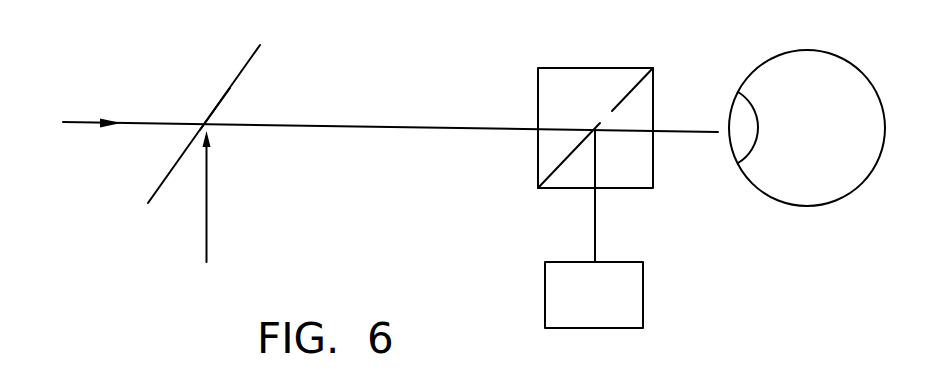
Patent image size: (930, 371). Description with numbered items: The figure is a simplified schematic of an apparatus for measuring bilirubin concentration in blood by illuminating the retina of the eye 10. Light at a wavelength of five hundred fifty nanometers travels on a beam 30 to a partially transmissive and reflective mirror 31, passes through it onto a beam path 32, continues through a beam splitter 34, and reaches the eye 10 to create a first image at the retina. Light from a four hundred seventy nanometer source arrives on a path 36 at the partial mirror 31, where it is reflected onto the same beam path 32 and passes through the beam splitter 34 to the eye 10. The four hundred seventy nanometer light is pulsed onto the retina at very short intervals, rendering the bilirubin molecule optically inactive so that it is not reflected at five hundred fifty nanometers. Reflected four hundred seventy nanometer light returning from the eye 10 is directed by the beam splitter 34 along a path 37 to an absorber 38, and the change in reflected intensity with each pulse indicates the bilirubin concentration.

The eye 10 is at (830, 53).
The beam 30 is at (155, 120).
The partially transmissive and reflective mirror 31 is at (242, 72).
The beam path 32 is at (392, 125).
The beam splitter 34 is at (603, 68).
The path 36 is at (207, 192).
The path 37 is at (595, 230).
The absorber 38 is at (545, 292).